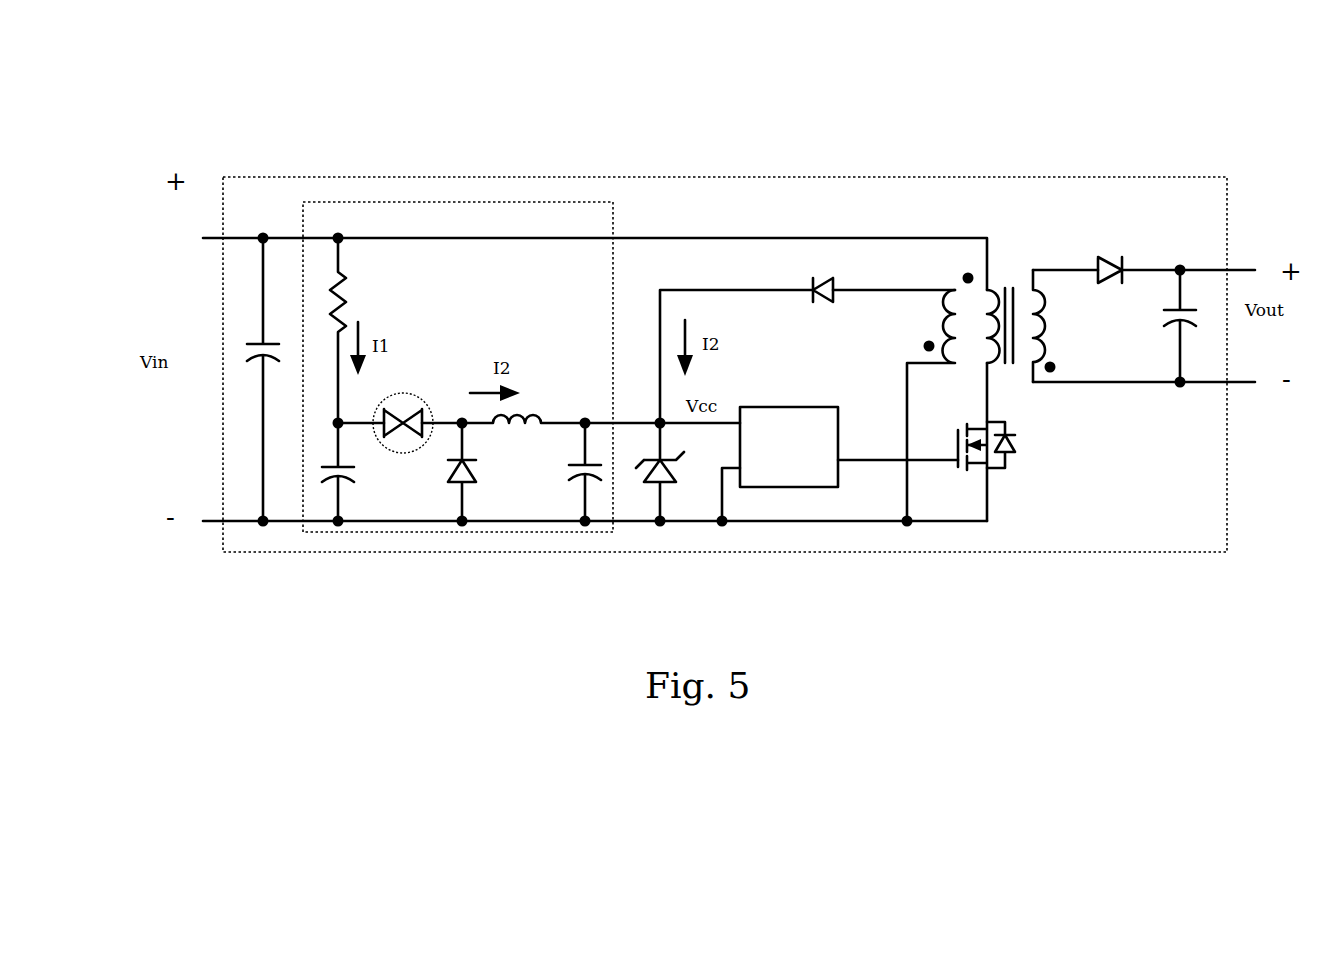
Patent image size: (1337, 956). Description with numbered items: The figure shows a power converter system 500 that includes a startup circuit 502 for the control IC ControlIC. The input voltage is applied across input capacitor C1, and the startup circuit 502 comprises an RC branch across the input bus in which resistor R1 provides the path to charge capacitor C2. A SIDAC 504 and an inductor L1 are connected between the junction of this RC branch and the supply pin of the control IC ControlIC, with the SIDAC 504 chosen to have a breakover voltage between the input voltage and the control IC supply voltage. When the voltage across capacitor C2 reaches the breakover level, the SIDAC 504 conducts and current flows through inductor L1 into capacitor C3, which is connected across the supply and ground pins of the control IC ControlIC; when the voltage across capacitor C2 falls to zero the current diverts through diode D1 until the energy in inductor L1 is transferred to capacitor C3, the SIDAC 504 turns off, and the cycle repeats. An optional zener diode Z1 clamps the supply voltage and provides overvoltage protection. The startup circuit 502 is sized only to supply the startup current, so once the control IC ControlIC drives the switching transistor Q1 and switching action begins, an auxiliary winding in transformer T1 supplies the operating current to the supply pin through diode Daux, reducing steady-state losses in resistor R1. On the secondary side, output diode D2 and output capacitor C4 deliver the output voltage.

The power converter system 500 is at (765, 177).
The startup circuit 502 is at (419, 200).
The SIDAC 504 is at (411, 394).
The input capacitor C1 is at (271, 379).
The resistor R1 is at (353, 330).
The capacitor C2 is at (351, 472).
The diode D1 is at (475, 472).
The inductor L1 is at (523, 434).
The capacitor C3 is at (565, 472).
The zener diode Z1 is at (668, 472).
The diode Daux is at (828, 305).
The control IC ControlIC is at (840, 464).
The switching transistor Q1 is at (995, 442).
The transformer T1 is at (981, 379).
The output diode D2 is at (1110, 254).
The output capacitor C4 is at (1162, 326).